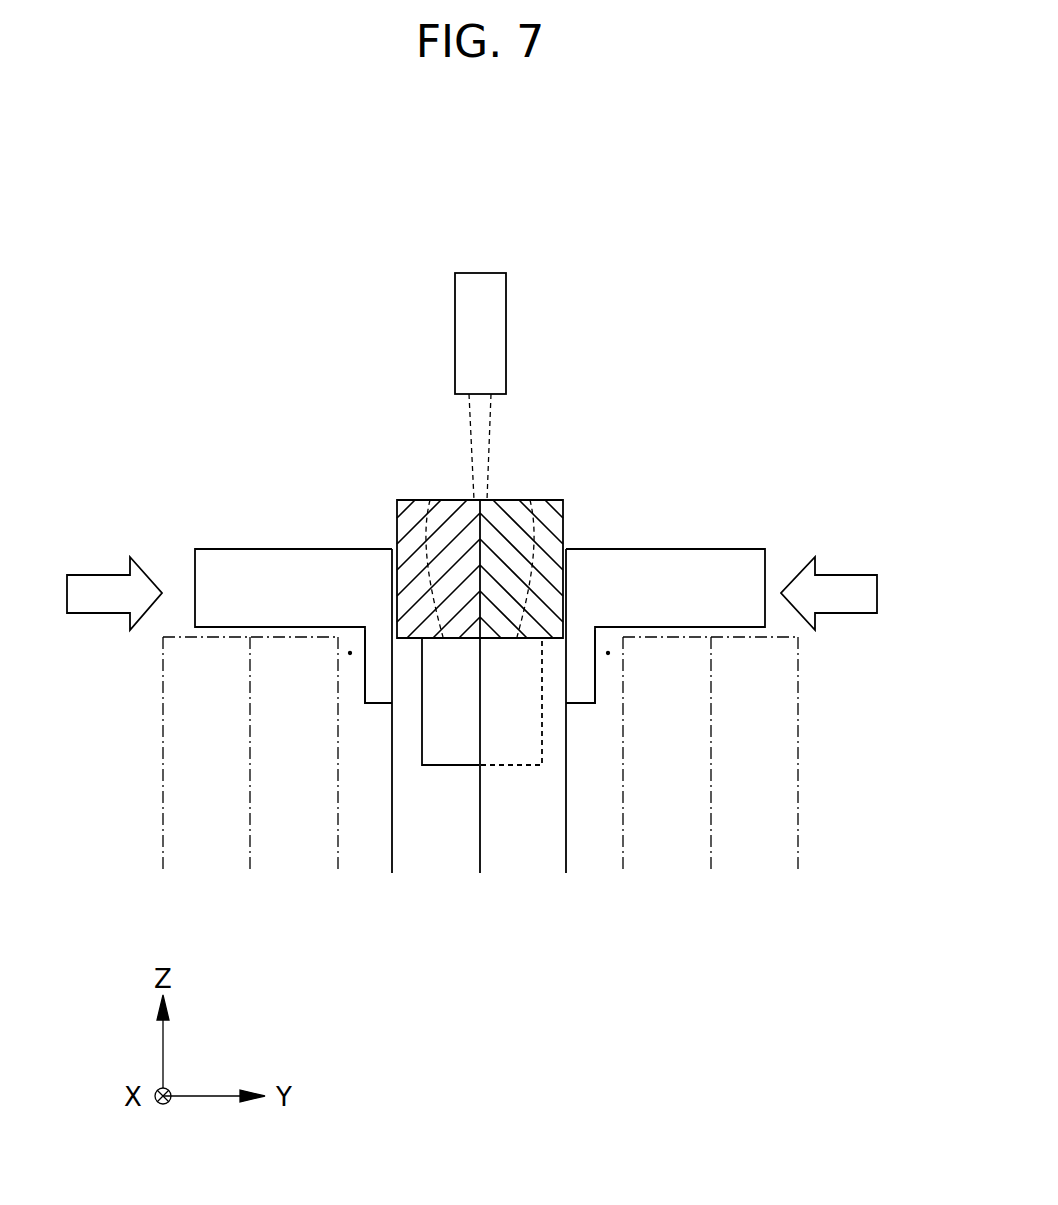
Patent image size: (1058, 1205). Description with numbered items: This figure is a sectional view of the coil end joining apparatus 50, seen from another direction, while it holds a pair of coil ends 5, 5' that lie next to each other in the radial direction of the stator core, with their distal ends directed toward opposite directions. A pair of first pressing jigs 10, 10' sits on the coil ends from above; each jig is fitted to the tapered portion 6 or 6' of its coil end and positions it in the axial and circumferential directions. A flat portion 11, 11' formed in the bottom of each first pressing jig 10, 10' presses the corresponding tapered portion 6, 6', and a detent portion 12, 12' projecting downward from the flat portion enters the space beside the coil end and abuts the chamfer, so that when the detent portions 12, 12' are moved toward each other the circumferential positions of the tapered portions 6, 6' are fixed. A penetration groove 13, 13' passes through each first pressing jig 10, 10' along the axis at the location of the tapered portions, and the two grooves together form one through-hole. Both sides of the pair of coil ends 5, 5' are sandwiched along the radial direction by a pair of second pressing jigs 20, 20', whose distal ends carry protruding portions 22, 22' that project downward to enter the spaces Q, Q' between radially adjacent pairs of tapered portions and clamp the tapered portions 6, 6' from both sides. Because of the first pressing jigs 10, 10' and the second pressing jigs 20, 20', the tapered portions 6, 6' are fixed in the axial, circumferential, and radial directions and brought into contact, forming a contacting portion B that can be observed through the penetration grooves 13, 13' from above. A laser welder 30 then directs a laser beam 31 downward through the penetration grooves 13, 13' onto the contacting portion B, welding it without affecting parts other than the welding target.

The coil end 5 is at (606, 733).
The coil end 5' is at (339, 733).
The tapered portion 6 is at (530, 755).
The tapered portion 6' is at (240, 755).
The first pressing jig 10 is at (576, 530).
The first pressing jig 10' is at (374, 525).
The flat portion 11 is at (612, 561).
The flat portion 11' is at (353, 556).
The detent portion 12 is at (577, 736).
The detent portion 12' is at (376, 738).
The penetration groove 13 is at (558, 513).
The penetration groove 13' is at (405, 513).
The second pressing jig 20 is at (721, 589).
The second pressing jig 20' is at (229, 601).
The protruding portion 22 is at (631, 674).
The protruding portion 22' is at (330, 673).
The laser welder 30 is at (477, 293).
The laser beam 31 is at (487, 415).
The coil end joining apparatus 50 is at (582, 990).
The contacting portion B is at (482, 687).
The space Q is at (646, 611).
The space Q' is at (322, 610).